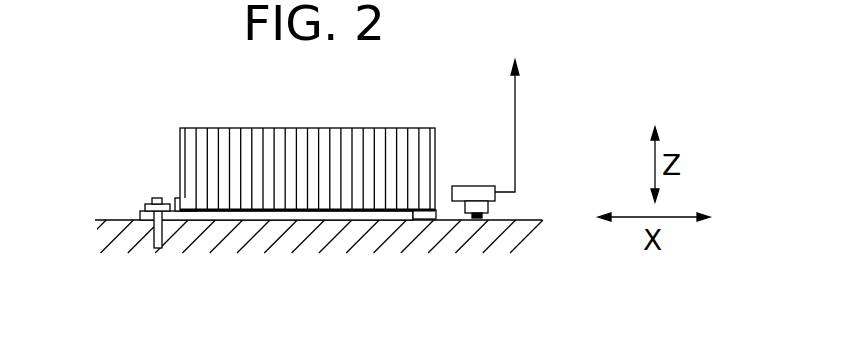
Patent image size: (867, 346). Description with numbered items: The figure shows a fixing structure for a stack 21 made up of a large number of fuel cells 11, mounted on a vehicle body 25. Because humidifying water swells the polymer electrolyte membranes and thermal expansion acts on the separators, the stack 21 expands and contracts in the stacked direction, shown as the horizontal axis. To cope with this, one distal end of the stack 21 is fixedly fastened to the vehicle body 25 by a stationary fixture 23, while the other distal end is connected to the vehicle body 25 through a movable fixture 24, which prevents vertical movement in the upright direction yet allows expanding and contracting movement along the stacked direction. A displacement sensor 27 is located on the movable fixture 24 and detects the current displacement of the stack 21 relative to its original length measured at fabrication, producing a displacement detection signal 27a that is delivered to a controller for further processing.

The fuel cell 11 is at (356, 197).
The stack 21 is at (298, 127).
The stationary fixture 23 is at (144, 209).
The movable fixture 24 is at (440, 208).
The vehicle body 25 is at (244, 240).
The displacement sensor 27 is at (488, 185).
The displacement detection signal 27a is at (518, 112).